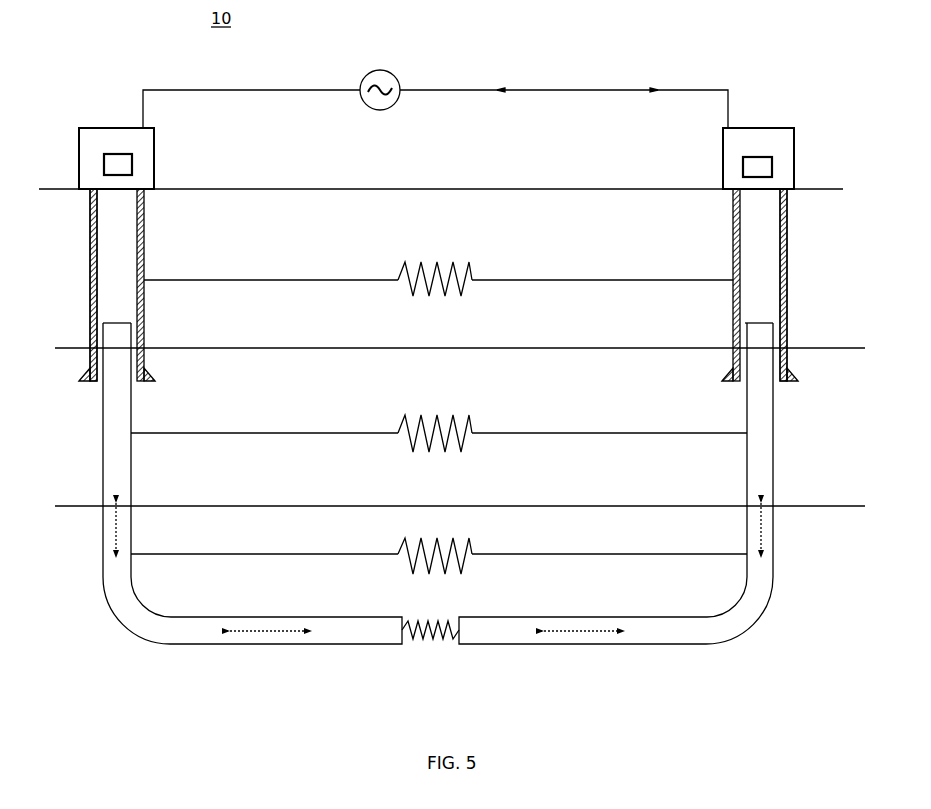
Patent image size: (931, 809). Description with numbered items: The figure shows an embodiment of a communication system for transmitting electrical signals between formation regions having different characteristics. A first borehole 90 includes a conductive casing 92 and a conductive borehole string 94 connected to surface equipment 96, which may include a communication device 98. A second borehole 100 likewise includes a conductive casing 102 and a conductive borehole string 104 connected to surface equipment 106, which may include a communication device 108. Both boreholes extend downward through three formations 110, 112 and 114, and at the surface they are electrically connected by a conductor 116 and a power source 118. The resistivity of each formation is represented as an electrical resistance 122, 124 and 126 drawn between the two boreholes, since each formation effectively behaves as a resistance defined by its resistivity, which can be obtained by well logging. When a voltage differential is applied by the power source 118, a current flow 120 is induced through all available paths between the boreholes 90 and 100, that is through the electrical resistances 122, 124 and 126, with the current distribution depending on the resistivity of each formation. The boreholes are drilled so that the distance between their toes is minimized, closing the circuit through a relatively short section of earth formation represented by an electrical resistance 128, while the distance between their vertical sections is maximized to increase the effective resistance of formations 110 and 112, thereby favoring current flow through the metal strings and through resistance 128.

The first borehole 90 is at (113, 233).
The conductive casing 92 is at (92, 272).
The borehole string 94 is at (102, 465).
The surface equipment 96 is at (100, 135).
The communication device 98 is at (108, 166).
The second borehole 100 is at (768, 240).
The conductive casing 102 is at (790, 302).
The borehole string 104 is at (762, 460).
The surface equipment 106 is at (787, 137).
The communication device 108 is at (767, 170).
The formation 110 is at (302, 310).
The formation 112 is at (304, 458).
The formation 114 is at (314, 578).
The conductor 116 is at (269, 92).
The power source 118 is at (366, 72).
The current flow 120 is at (576, 92).
The electrical resistance 122 is at (420, 266).
The electrical resistance 124 is at (424, 420).
The electrical resistance 126 is at (410, 565).
The electrical resistance 128 is at (437, 637).